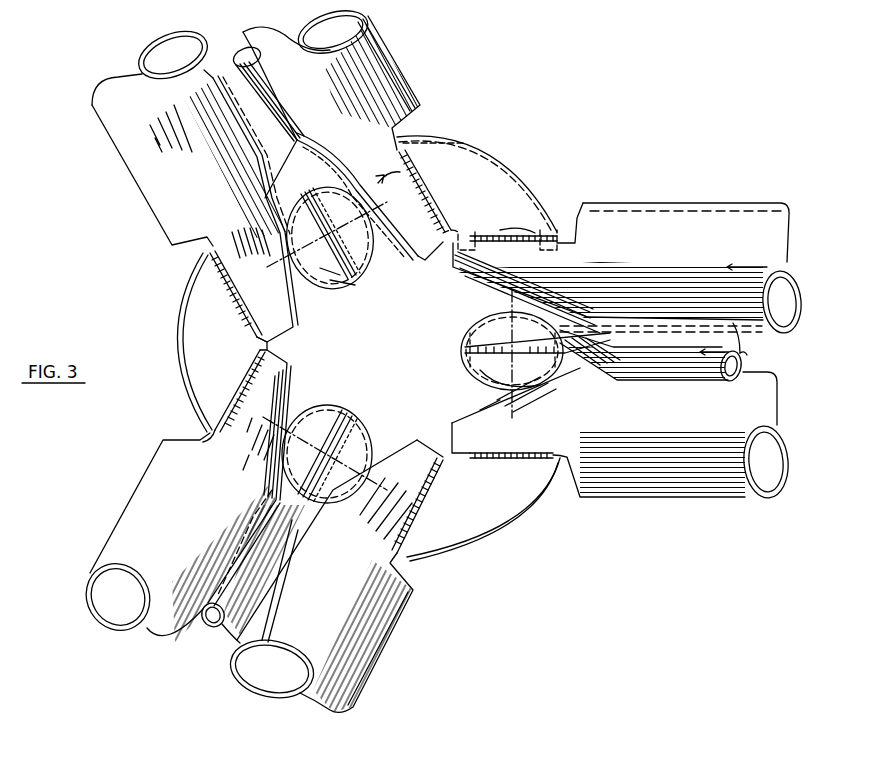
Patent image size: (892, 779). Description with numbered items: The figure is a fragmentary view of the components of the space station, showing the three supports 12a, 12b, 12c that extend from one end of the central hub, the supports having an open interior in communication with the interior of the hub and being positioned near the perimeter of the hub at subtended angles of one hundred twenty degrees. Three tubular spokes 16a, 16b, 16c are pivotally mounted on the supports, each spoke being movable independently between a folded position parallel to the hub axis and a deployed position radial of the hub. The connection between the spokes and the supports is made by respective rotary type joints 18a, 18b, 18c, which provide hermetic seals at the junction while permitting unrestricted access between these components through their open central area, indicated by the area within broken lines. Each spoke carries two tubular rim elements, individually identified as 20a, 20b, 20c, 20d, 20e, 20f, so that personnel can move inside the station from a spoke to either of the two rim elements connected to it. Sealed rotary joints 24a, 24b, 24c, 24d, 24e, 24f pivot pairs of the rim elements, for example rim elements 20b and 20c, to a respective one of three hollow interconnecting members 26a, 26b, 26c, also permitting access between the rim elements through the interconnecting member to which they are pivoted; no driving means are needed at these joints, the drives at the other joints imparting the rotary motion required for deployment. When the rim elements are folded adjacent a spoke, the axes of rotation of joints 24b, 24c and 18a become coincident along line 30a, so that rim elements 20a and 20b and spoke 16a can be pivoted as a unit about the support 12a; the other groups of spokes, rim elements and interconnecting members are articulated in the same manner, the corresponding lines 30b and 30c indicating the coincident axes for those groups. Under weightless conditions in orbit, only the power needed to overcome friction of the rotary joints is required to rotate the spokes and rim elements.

The support 12a is at (472, 372).
The support 12b is at (330, 423).
The support 12c is at (340, 262).
The tubular spoke 16a is at (742, 350).
The tubular spoke 16b is at (228, 622).
The tubular spoke 16c is at (237, 80).
The rotary type joint 18a is at (480, 345).
The rotary type joint 18b is at (340, 417).
The rotary type joint 18c is at (353, 273).
The tubular rim element 20a is at (707, 217).
The tubular rim element 20b is at (633, 480).
The tubular rim element 20c is at (357, 660).
The tubular rim element 20d is at (120, 522).
The tubular rim element 20e is at (167, 210).
The tubular rim element 20f is at (383, 62).
The sealed rotary joint 24a is at (417, 180).
The sealed rotary joint 24b is at (520, 233).
The sealed rotary joint 24c is at (493, 459).
The sealed rotary joint 24d is at (432, 488).
The sealed rotary joint 24e is at (247, 373).
The sealed rotary joint 24f is at (223, 280).
The hollow interconnecting member 26a is at (497, 157).
The hollow interconnecting member 26b is at (480, 527).
The hollow interconnecting member 26c is at (187, 347).
The line 30a is at (527, 307).
The hook portion 30b is at (280, 415).
The hook portion 30c is at (367, 237).